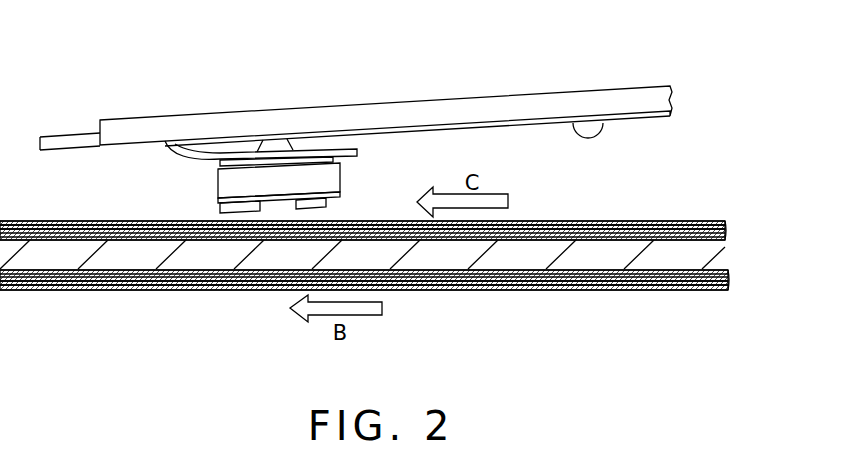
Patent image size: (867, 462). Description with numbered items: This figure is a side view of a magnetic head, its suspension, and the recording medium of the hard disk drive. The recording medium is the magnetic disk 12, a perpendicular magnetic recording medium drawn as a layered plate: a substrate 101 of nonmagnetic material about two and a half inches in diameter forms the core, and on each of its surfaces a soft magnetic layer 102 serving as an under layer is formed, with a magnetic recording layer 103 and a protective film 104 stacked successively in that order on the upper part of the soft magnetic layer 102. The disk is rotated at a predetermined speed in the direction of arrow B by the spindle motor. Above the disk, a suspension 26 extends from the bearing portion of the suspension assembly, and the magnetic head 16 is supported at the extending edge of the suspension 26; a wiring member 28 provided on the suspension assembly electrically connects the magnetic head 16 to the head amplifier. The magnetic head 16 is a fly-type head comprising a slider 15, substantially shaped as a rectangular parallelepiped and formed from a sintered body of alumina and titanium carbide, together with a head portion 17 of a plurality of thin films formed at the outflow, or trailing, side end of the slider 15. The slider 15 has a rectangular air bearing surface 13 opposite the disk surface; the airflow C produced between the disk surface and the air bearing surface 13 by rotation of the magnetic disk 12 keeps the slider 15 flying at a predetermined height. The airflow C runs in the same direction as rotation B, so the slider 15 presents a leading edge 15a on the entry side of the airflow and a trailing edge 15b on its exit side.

The magnetic disk 12 is at (400, 240).
The air bearing surface 13 is at (278, 205).
The slider 15 is at (251, 178).
The leading edge 15a is at (343, 170).
The trailing edge 15b is at (218, 200).
The magnetic head 16 is at (349, 184).
The head portion 17 is at (218, 178).
The suspension 26 is at (538, 102).
The wiring member 28 is at (603, 124).
The substrate 101 is at (608, 262).
The soft magnetic layer 102 is at (725, 245).
The magnetic recording layer 103 is at (648, 220).
The protective film 104 is at (723, 220).